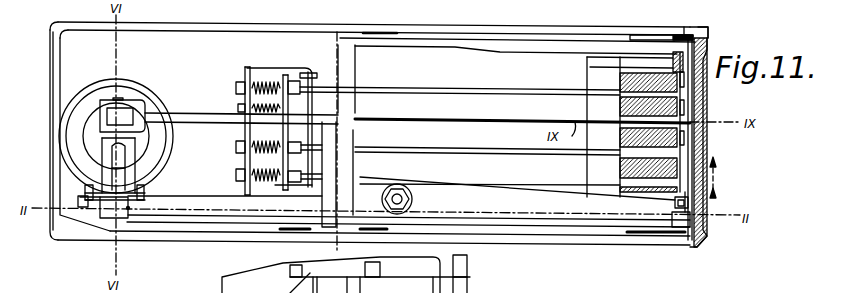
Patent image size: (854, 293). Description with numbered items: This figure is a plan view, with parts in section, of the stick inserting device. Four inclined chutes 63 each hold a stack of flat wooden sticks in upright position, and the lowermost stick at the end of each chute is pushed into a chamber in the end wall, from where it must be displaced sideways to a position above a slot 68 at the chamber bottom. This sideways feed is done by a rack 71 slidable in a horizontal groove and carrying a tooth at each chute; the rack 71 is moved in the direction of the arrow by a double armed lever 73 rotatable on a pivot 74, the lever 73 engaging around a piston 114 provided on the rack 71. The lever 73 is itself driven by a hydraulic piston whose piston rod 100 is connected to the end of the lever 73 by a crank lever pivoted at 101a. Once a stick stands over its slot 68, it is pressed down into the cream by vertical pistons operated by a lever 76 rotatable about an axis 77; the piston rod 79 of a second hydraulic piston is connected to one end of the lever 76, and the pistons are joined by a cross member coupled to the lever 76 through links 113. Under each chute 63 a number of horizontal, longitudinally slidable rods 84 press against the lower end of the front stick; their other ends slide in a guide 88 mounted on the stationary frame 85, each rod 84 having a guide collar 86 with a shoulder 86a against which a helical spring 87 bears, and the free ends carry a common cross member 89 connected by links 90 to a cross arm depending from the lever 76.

The inclined chute 63 is at (628, 92).
The slot 68 is at (682, 138).
The rack 71 is at (702, 225).
The double armed lever 73 is at (568, 206).
The pivot 74 is at (413, 197).
The lever 76 is at (200, 118).
The axis 77 is at (342, 22).
The piston rod 79 is at (107, 115).
The rod 84 is at (545, 90).
The stationary frame 85 is at (229, 29).
The guide collar 86 is at (297, 180).
The shoulder 86a is at (276, 160).
The spring 87 is at (260, 83).
The guide 88 is at (283, 83).
The cross member 89 is at (243, 134).
The link 90 is at (303, 72).
The piston rod 100 is at (113, 153).
The pivot 101a is at (80, 200).
The link 113 is at (684, 30).
The piston 114 is at (695, 208).